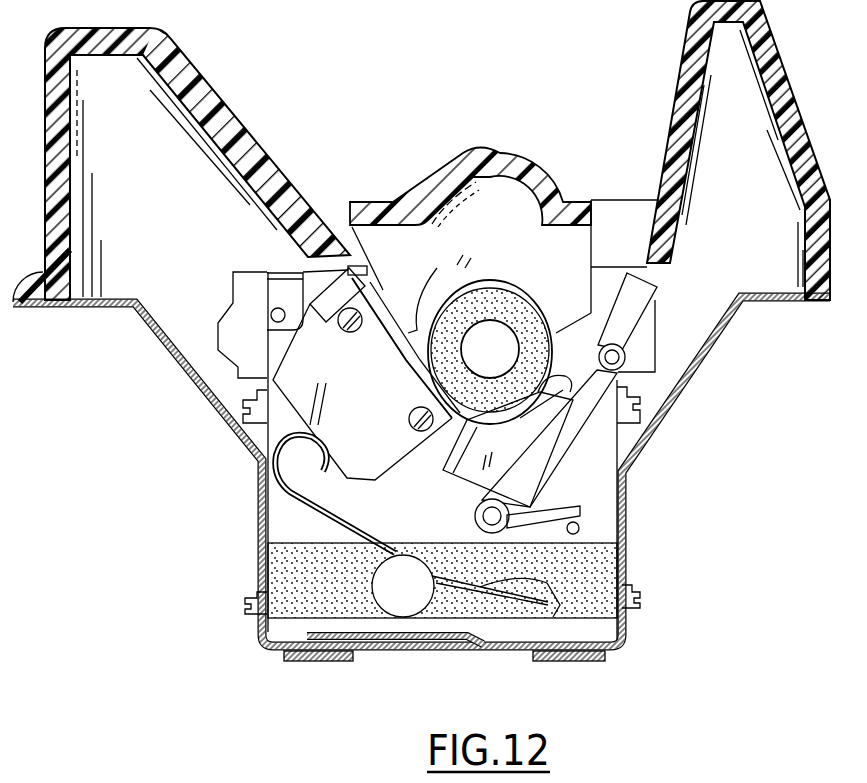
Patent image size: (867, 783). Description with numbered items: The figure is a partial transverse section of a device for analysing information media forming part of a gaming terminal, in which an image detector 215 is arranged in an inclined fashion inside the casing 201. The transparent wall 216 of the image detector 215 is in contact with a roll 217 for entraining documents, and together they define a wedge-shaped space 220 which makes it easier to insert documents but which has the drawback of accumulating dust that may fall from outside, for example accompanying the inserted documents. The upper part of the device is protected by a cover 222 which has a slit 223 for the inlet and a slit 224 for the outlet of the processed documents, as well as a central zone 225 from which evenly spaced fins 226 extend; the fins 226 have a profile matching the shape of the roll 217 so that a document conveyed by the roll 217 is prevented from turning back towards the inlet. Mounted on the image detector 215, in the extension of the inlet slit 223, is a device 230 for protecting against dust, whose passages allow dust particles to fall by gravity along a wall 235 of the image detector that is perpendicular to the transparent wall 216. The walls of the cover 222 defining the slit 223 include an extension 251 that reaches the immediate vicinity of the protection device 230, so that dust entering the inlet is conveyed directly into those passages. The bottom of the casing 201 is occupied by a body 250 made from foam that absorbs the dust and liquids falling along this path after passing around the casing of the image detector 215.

The casing 201 is at (640, 508).
The image detector 215 is at (418, 396).
The transparent wall 216 is at (388, 327).
The roll 217 is at (523, 318).
The wedge-shaped space 220 is at (490, 329).
The cover 222 is at (242, 110).
The slit 223 is at (330, 210).
The slit 224 is at (625, 228).
The central zone 225 is at (467, 147).
The fins 226 is at (495, 210).
The device for protecting against dust 230 is at (343, 287).
The wall 235 is at (300, 333).
The body 250 is at (307, 600).
The extension 251 is at (310, 233).